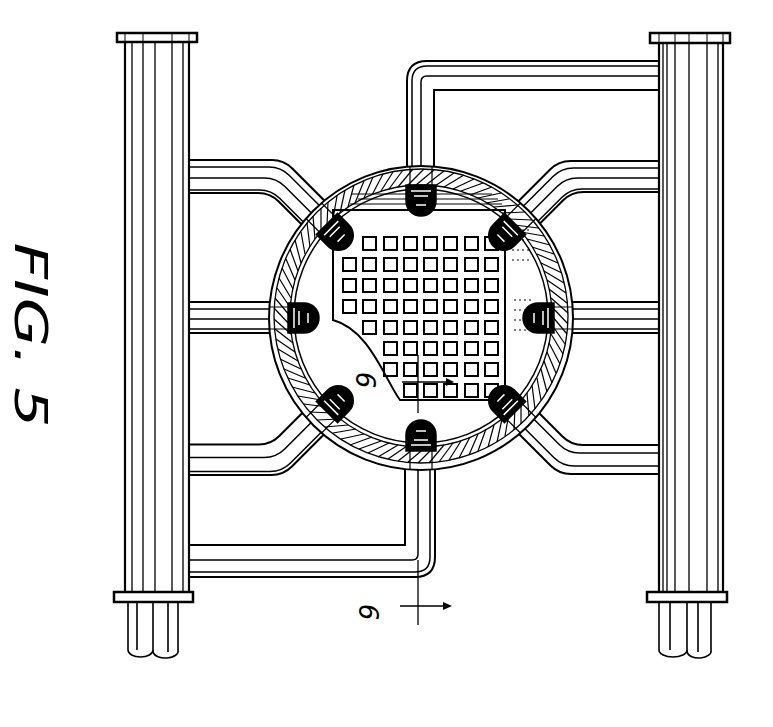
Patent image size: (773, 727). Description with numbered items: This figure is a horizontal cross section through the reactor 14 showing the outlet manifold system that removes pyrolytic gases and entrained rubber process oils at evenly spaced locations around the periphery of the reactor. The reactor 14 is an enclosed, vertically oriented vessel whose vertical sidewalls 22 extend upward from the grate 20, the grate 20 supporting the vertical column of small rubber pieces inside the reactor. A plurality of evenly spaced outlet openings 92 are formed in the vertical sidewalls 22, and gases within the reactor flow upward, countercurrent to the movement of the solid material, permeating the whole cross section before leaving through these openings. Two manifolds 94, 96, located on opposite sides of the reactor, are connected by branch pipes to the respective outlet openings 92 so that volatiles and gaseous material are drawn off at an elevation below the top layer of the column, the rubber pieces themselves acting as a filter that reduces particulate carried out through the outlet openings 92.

The reactor 14 is at (560, 233).
The grate 20 is at (442, 380).
The vertical sidewalls 22 is at (278, 272).
The outlet openings 92 is at (400, 172).
The manifold 94 is at (697, 218).
The manifold 96 is at (147, 437).